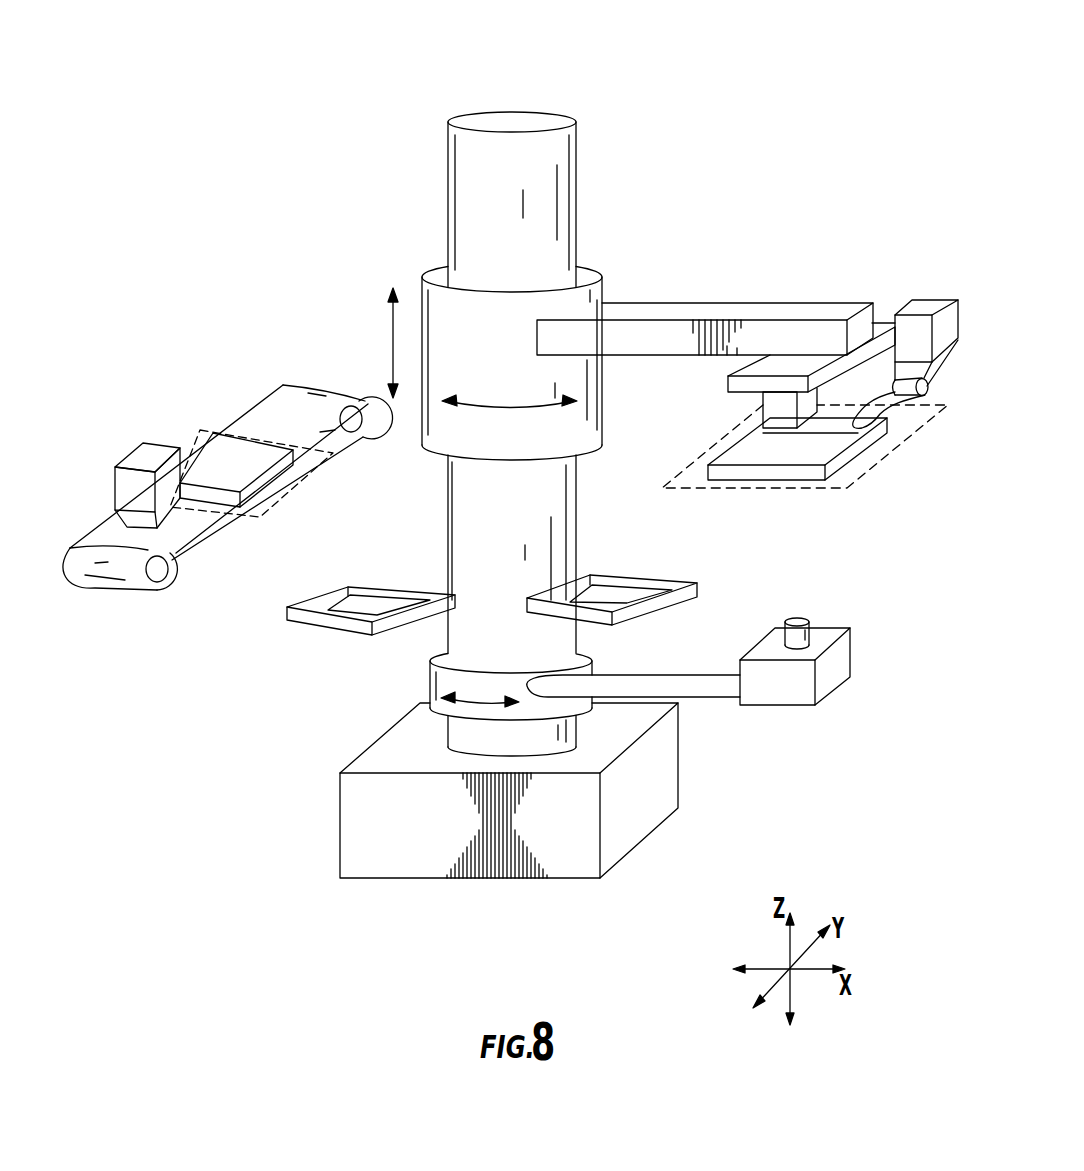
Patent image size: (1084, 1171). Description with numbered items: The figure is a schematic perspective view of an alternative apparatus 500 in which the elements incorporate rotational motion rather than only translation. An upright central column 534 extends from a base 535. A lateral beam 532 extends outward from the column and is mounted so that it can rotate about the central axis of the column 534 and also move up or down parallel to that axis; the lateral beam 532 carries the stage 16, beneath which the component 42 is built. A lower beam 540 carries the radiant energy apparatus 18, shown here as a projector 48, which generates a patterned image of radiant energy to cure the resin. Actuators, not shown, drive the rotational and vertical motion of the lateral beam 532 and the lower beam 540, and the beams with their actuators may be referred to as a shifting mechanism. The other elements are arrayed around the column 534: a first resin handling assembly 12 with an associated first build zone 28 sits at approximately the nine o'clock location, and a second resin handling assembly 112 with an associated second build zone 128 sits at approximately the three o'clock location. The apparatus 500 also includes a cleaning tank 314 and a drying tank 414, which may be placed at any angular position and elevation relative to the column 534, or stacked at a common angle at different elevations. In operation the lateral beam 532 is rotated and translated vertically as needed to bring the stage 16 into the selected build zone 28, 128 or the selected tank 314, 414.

The apparatus 500 is at (628, 58).
The lateral beam 532 is at (648, 312).
The stage 16 is at (790, 367).
The component 42 is at (778, 407).
The second build zone 128 is at (858, 478).
The second resin handling assembly 112 is at (810, 404).
The radiant energy apparatus 18 is at (695, 655).
The projector 48 is at (793, 697).
The lower beam 540 is at (625, 690).
The cleaning tank 314 is at (648, 587).
The drying tank 414 is at (378, 630).
The central column 534 is at (523, 525).
The base 535 is at (398, 868).
The first resin handling assembly 12 is at (216, 487).
The first build zone 28 is at (299, 486).